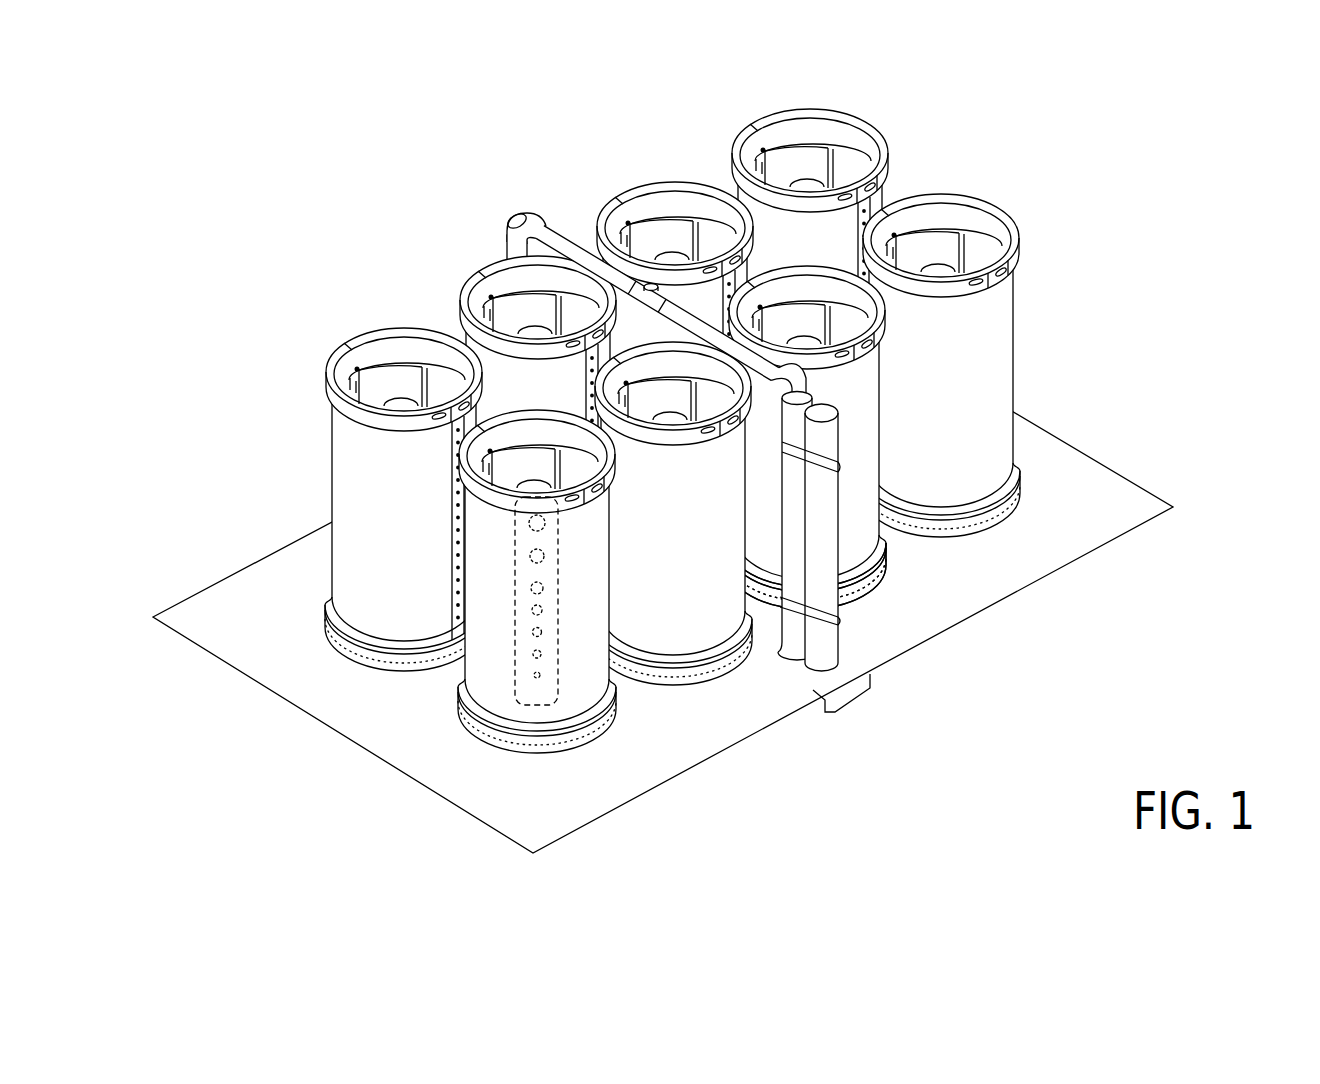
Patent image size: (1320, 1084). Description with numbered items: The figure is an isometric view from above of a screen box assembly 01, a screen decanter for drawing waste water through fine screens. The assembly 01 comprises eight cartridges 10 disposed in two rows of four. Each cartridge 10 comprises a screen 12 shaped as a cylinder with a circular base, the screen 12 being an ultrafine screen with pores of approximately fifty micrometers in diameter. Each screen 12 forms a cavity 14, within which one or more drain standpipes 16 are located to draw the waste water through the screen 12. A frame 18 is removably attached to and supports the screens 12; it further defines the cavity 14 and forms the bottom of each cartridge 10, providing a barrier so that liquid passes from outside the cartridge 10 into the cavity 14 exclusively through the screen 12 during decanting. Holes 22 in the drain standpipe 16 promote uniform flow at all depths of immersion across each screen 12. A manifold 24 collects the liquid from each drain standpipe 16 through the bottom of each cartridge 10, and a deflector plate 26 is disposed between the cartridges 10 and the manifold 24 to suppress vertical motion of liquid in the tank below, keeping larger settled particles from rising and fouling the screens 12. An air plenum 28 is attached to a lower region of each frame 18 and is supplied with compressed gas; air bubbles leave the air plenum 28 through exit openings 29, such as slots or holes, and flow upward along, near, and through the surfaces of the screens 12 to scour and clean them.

The screen box assembly 01 is at (706, 460).
The cartridge 10 is at (944, 437).
The screen 12 is at (857, 472).
The cavity 14 is at (932, 224).
The drain standpipe 16 is at (673, 246).
The frame 18 is at (1014, 224).
The holes 22 is at (530, 587).
The manifold 24 is at (848, 697).
The deflector plate 26 is at (1093, 525).
The air plenum 28 is at (884, 565).
The exit openings 29 is at (723, 666).